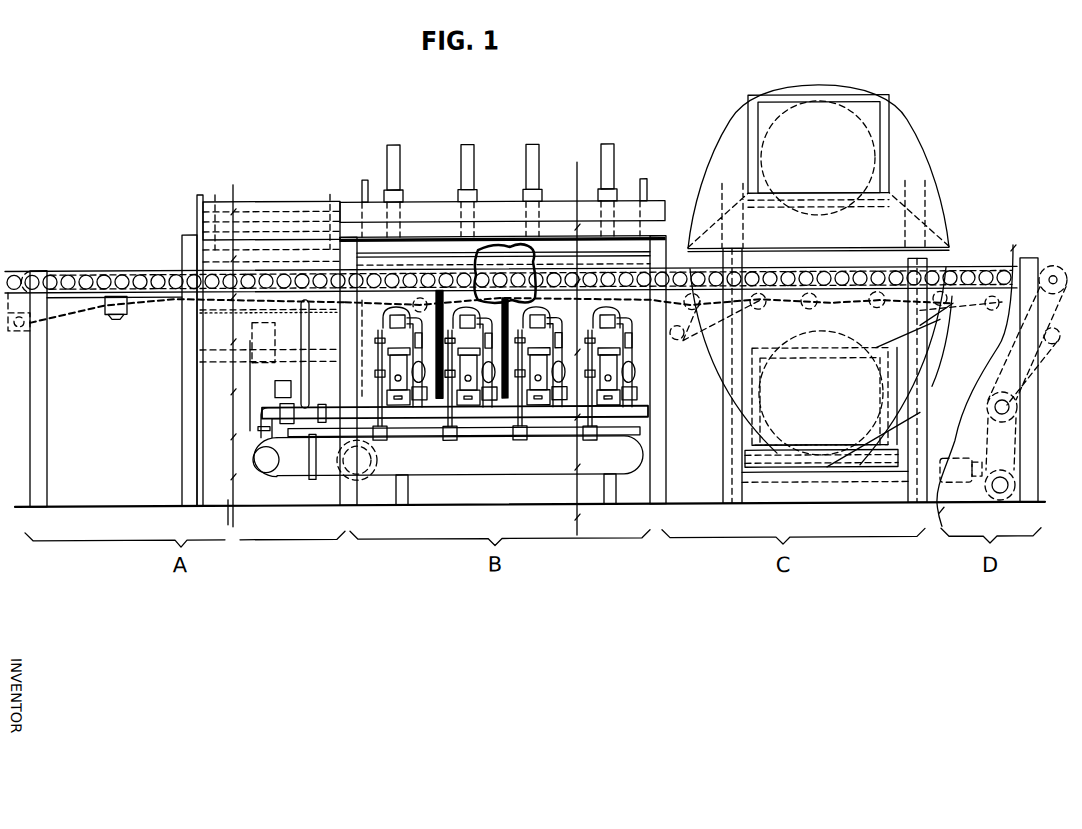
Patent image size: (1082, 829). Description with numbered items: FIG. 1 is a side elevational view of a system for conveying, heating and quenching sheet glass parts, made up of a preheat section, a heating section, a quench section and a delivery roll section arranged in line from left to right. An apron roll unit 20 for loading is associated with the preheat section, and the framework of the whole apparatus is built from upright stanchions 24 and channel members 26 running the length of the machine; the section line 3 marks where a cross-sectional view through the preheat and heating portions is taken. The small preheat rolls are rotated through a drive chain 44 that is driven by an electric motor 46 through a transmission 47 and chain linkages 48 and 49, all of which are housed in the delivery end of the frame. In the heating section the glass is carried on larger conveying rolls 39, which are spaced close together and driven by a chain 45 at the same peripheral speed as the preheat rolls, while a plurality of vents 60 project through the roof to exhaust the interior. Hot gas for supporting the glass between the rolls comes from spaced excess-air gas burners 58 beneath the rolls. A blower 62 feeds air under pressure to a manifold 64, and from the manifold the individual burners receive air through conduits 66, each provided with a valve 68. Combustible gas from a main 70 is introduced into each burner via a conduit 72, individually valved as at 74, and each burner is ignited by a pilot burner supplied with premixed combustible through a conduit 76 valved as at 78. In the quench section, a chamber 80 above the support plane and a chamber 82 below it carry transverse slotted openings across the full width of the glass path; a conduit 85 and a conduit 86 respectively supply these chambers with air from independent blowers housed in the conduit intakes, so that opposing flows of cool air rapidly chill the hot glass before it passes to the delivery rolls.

The section line 3- 3 is at (277, 251).
The apron roll unit 20 is at (60, 269).
The stanchions 24 is at (182, 451).
The channel members 26 is at (73, 299).
The drive chain 44 is at (169, 304).
The chain 45 is at (601, 323).
The conveying rolls 39 is at (488, 287).
The gas burners 58 is at (472, 342).
The vents 60 is at (462, 172).
The blowers 62 is at (250, 422).
The manifolds 64 is at (467, 475).
The conduits 66 is at (538, 432).
The valve 68 is at (384, 392).
The main 70 is at (313, 415).
The conduit 72 is at (634, 361).
The valve 74 is at (637, 383).
The conduit 76 is at (384, 334).
The valve 78 is at (384, 378).
The chamber 80 is at (917, 161).
The chamber 82 is at (946, 353).
The conduit 85 is at (836, 95).
The conduit 86 is at (800, 469).
The electric motor 46 is at (965, 463).
The transmission 47 is at (1001, 446).
The chain linkage 48 is at (988, 430).
The chain linkage 49 is at (1034, 370).